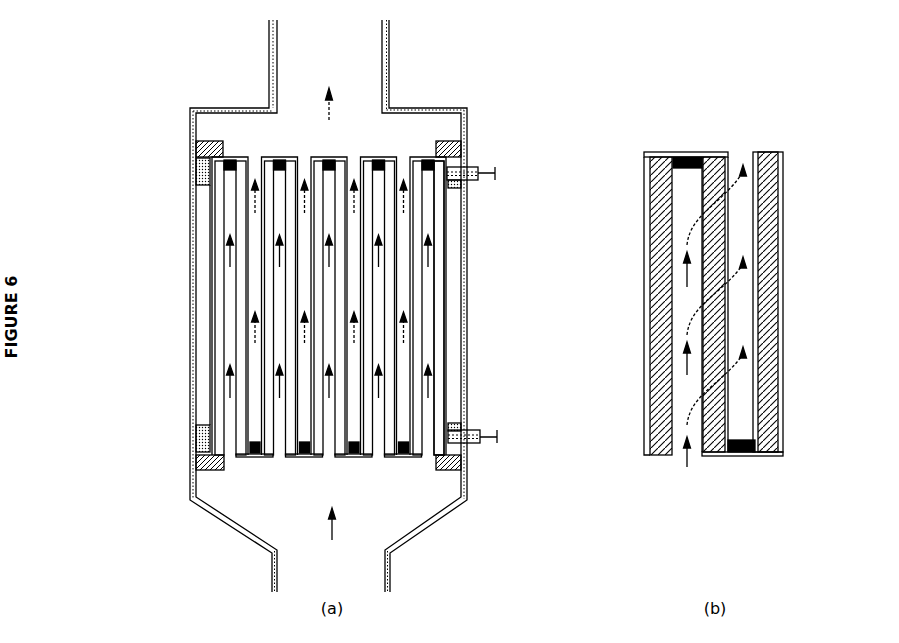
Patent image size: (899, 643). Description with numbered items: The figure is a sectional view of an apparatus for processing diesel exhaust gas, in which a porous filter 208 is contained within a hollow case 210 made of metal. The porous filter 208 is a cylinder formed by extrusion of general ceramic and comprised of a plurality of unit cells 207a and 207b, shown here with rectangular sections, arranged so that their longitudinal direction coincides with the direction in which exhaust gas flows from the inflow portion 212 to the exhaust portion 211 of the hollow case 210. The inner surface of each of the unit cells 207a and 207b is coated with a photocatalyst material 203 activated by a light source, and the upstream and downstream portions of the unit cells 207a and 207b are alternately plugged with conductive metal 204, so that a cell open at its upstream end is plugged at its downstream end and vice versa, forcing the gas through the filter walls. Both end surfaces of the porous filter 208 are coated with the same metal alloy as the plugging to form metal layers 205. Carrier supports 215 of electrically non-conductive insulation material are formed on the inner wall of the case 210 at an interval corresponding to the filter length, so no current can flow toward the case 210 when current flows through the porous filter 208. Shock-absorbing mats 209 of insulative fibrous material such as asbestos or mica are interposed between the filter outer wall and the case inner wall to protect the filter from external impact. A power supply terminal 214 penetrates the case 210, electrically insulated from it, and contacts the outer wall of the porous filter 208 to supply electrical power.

The photocatalyst material 203 is at (250, 352).
The conductive metal 204 is at (258, 455).
The metal layers 205 is at (292, 455).
The unit cell 207a is at (230, 323).
The unit cell 207b is at (252, 290).
The porous filter 208 is at (445, 312).
The shock-absorbing mats 209 is at (195, 170).
The hollow case 210 is at (467, 258).
The exhaust portion 211 is at (370, 67).
The inflow portion 212 is at (378, 570).
The power supply terminal 214 is at (478, 178).
The carrier supports 215 is at (467, 143).